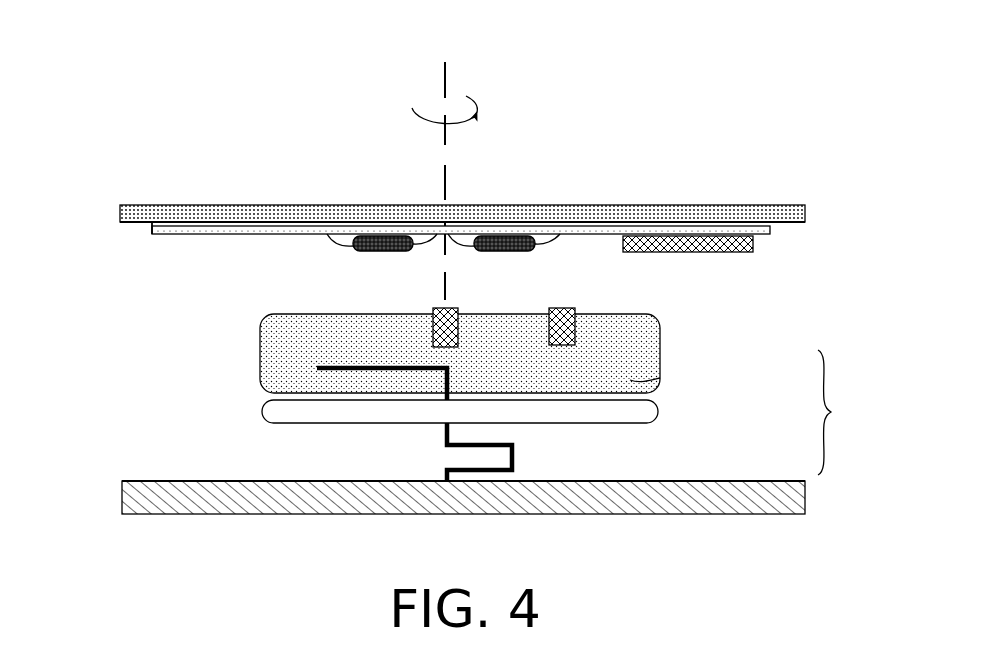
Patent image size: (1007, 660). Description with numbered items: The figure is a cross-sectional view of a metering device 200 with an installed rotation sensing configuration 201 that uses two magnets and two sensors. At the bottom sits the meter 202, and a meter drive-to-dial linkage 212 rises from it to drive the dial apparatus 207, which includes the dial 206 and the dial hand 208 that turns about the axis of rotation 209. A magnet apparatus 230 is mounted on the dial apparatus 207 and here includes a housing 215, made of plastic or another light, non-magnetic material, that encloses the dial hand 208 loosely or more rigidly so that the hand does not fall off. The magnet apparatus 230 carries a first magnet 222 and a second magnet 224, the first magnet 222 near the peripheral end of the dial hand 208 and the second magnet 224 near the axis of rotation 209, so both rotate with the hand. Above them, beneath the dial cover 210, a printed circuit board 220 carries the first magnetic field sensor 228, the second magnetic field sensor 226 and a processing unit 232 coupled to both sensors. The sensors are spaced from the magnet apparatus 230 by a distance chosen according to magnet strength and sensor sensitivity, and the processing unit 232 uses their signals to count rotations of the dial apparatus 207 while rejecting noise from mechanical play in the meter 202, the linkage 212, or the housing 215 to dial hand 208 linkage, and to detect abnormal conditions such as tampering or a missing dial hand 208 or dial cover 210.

The metering device 200 is at (706, 148).
The rotation sensing configuration 201 is at (160, 414).
The meter 202 is at (247, 500).
The dial 206 is at (655, 421).
The dial apparatus 207 is at (843, 412).
The dial hand 208 is at (317, 368).
The axis of rotation 209 is at (444, 195).
The dial cover 210 is at (770, 215).
The meter drive-to-dial linkage 212 is at (512, 445).
The housing 215 is at (660, 378).
The printed circuit board 220 is at (152, 236).
The first magnet 222 is at (575, 338).
The second magnet 224 is at (433, 332).
The second magnetic field sensor 226 is at (345, 254).
The first magnetic field sensor 228 is at (549, 257).
The magnet apparatus 230 is at (772, 331).
The processing unit 232 is at (745, 253).